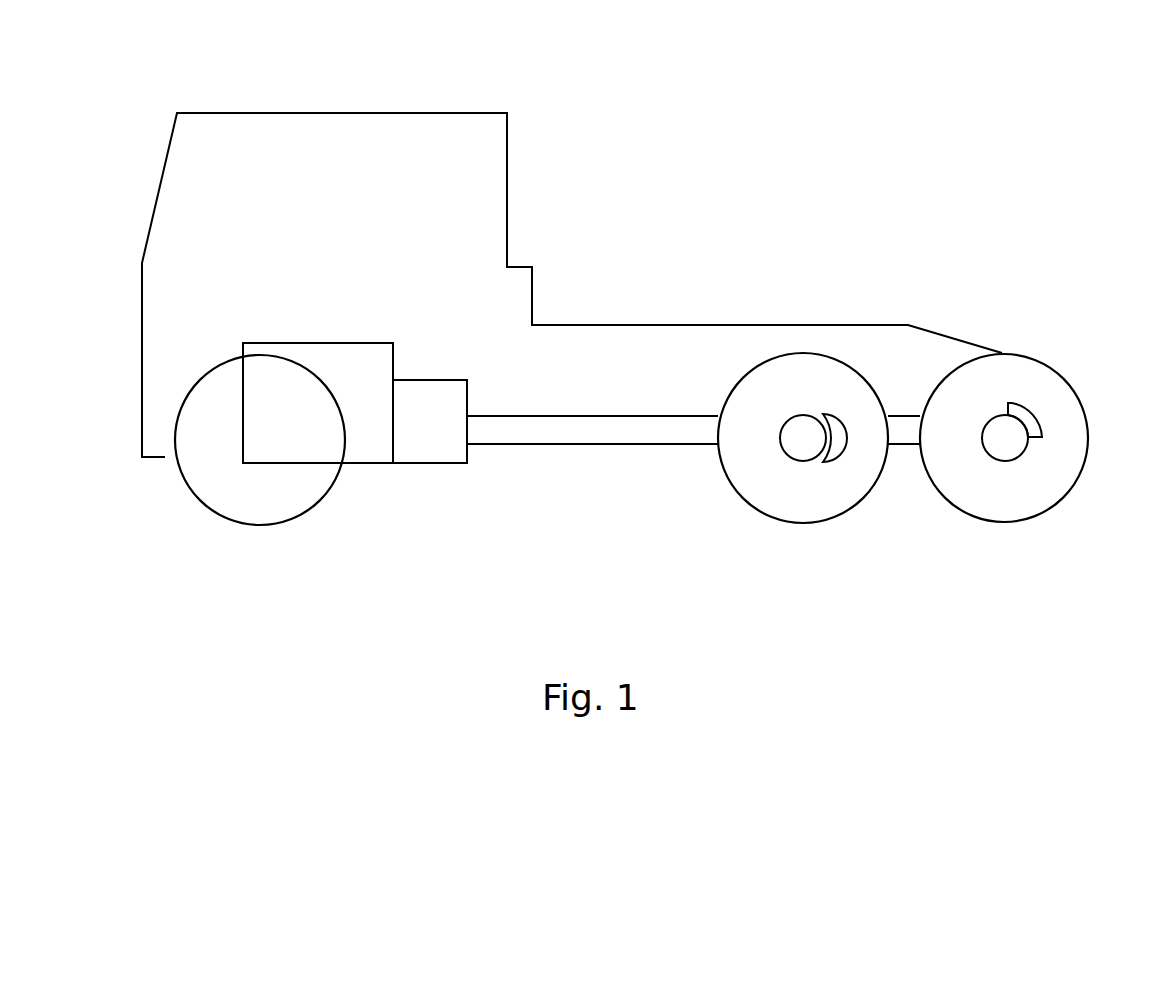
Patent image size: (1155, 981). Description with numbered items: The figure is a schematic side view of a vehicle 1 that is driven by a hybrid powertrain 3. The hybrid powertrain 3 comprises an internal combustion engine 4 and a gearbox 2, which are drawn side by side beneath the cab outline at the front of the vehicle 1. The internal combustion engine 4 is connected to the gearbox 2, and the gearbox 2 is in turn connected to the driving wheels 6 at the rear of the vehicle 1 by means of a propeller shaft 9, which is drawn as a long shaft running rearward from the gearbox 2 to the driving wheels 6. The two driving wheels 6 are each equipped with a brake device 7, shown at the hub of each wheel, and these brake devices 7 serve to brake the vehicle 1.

The vehicle 1 is at (613, 98).
The gearbox 2 is at (462, 465).
The hybrid powertrain 3 is at (407, 498).
The internal combustion engine 4 is at (290, 343).
The driving wheels 6 is at (848, 510).
The brake devices 7 is at (832, 418).
The propeller shaft 9 is at (565, 445).